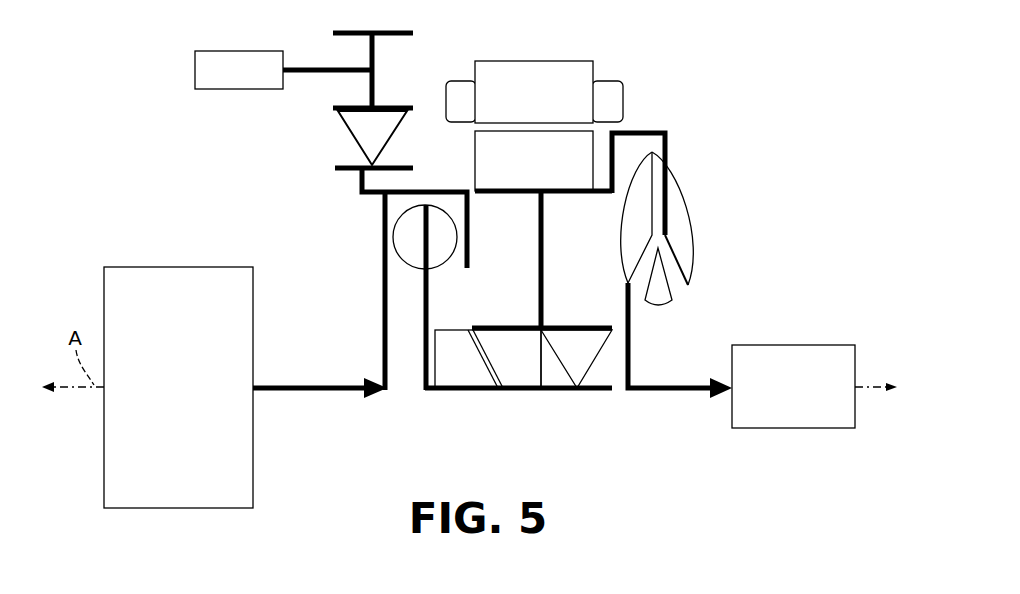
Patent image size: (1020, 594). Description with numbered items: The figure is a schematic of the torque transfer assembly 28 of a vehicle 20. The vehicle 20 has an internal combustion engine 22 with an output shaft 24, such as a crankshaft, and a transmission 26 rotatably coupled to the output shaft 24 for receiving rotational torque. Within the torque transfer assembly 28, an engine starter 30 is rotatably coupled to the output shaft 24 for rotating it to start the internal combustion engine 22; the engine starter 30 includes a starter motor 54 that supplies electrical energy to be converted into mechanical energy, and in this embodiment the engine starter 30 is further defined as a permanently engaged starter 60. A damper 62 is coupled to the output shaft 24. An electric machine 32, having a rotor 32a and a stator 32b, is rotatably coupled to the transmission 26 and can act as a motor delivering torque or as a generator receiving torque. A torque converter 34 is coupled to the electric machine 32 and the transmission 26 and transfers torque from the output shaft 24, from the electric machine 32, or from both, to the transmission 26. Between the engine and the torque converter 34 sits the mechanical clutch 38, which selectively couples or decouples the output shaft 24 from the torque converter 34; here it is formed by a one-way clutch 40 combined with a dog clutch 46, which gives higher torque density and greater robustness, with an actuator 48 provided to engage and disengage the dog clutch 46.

The vehicle 20 is at (77, 58).
The internal combustion engine 22 is at (178, 387).
The output shaft 24 is at (296, 391).
The transmission 26 is at (793, 386).
The torque transfer assembly 28 is at (612, 200).
The engine starter 30 is at (304, 85).
The electric machine 32 is at (579, 97).
The rotor 32a is at (580, 153).
The stator 32b is at (572, 105).
The torque converter 34 is at (697, 232).
The mechanical clutch 38 is at (544, 424).
The one-way clutch 40 is at (585, 355).
The dog clutch 46 is at (452, 372).
The actuator 48 is at (512, 370).
The starter motor 54 is at (283, 70).
The permanently engaged starter 60 is at (348, 128).
The damper 62 is at (385, 238).